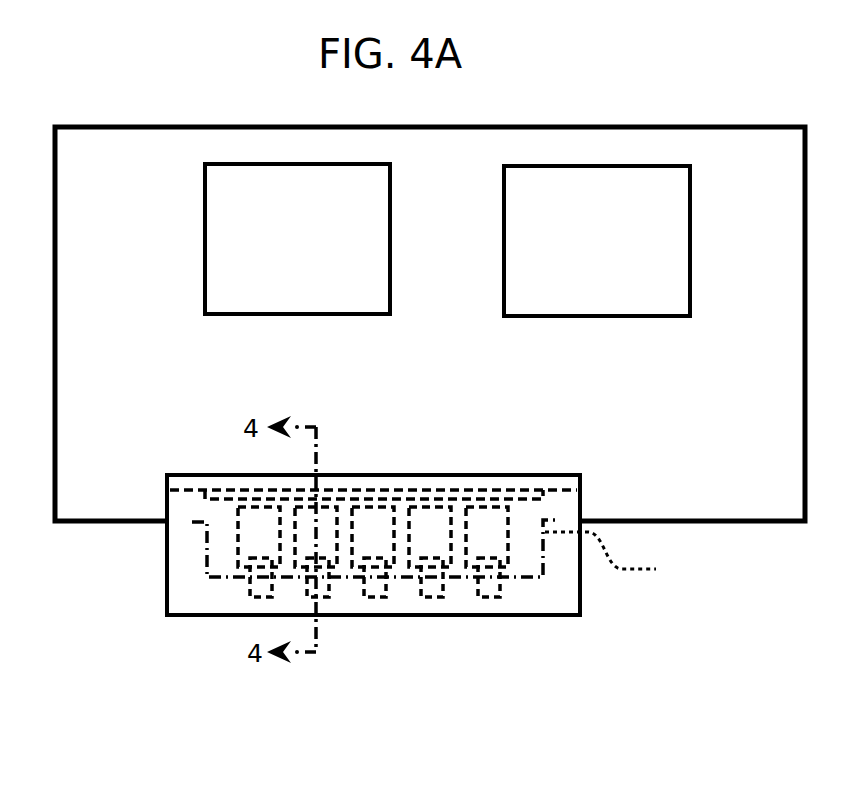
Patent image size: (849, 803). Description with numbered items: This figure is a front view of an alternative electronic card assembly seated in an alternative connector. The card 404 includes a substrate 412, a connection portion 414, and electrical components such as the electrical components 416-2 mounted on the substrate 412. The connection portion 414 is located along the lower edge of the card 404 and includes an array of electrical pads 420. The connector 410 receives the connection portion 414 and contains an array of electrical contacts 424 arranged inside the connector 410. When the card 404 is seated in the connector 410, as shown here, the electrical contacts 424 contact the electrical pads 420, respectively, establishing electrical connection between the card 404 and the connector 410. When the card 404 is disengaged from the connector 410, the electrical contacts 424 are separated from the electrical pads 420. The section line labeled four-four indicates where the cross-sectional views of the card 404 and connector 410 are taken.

The card 404 is at (511, 113).
The substrate 412 is at (655, 125).
The electrical component 416-2 is at (334, 253).
The connector 410 is at (596, 620).
The electrical pads 420 is at (238, 542).
The connection portion 414 is at (630, 562).
The electrical contacts 424 is at (490, 585).